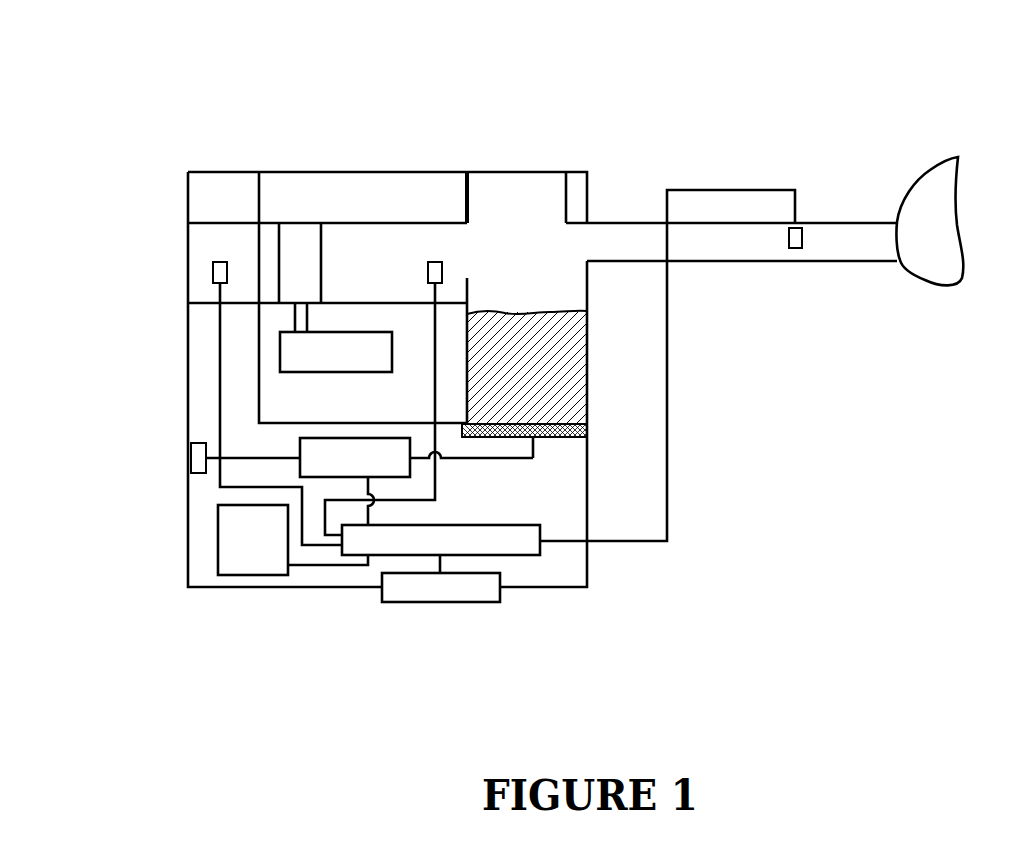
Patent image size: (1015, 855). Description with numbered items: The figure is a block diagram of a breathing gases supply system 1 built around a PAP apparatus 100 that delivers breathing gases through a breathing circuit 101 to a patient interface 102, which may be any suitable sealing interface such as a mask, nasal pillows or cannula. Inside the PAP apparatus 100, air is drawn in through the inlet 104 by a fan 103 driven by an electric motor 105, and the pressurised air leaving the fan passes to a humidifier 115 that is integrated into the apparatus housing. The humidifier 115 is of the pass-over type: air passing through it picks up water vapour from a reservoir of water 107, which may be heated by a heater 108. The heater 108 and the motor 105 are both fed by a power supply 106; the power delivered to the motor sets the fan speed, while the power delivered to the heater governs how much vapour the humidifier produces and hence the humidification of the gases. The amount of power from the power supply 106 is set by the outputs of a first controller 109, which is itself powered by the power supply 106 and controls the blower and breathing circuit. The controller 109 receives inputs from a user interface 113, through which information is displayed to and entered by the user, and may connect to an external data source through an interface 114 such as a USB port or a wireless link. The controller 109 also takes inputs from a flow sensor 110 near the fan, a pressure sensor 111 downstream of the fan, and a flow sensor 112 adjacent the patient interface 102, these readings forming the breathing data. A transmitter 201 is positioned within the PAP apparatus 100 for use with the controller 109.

The breathing gases supply system 1 is at (767, 109).
The PAP apparatus 100 is at (530, 171).
The breathing circuit 101 is at (713, 250).
The patient interface 102 is at (942, 173).
The fan 103 is at (302, 237).
The inlet 104 is at (219, 232).
The electric motor 105 is at (283, 358).
The power supply 106 is at (300, 462).
The reservoir of water 107 is at (557, 372).
The heater 108 is at (580, 428).
The first controller 109 is at (520, 548).
The flow sensor 110 is at (213, 272).
The pressure sensor 111 is at (435, 262).
The flow sensor 112 is at (797, 248).
The user interface 113 is at (263, 567).
The interface 114 is at (450, 602).
The humidifier 115 is at (530, 287).
The transmitter 201 is at (195, 455).